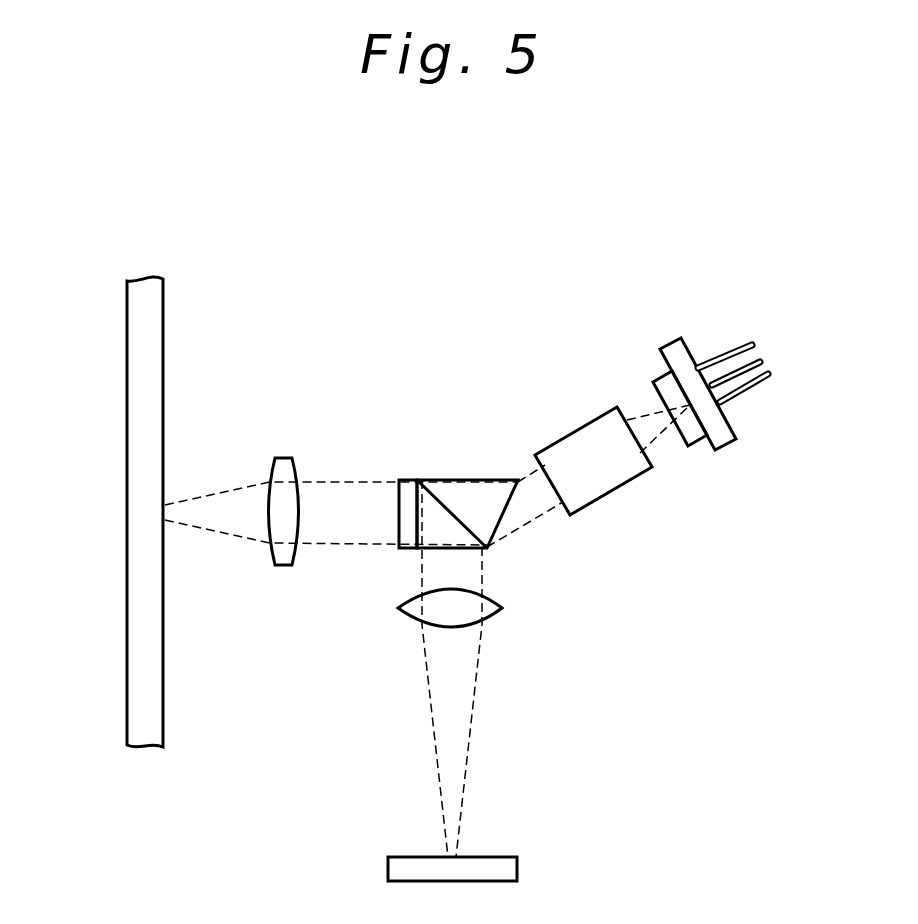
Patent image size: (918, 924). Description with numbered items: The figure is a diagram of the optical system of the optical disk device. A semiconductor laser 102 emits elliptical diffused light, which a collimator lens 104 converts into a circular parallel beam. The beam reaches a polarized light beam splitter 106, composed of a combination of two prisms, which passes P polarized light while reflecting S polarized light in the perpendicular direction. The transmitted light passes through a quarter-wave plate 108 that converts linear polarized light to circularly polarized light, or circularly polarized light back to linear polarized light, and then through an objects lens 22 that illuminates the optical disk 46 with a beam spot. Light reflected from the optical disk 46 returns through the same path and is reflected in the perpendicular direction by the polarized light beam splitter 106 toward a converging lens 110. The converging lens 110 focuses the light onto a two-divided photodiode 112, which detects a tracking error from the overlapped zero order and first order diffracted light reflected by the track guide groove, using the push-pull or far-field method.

The optical disk 46 is at (130, 358).
The objects lens 22 is at (283, 460).
The semiconductor laser 102 is at (667, 387).
The collimator lens 104 is at (615, 478).
The polarized light beam splitter 106 is at (470, 488).
The λ/4 plate 108 is at (390, 528).
The converging lens 110 is at (490, 610).
The two-divided photodiode 112 is at (508, 868).